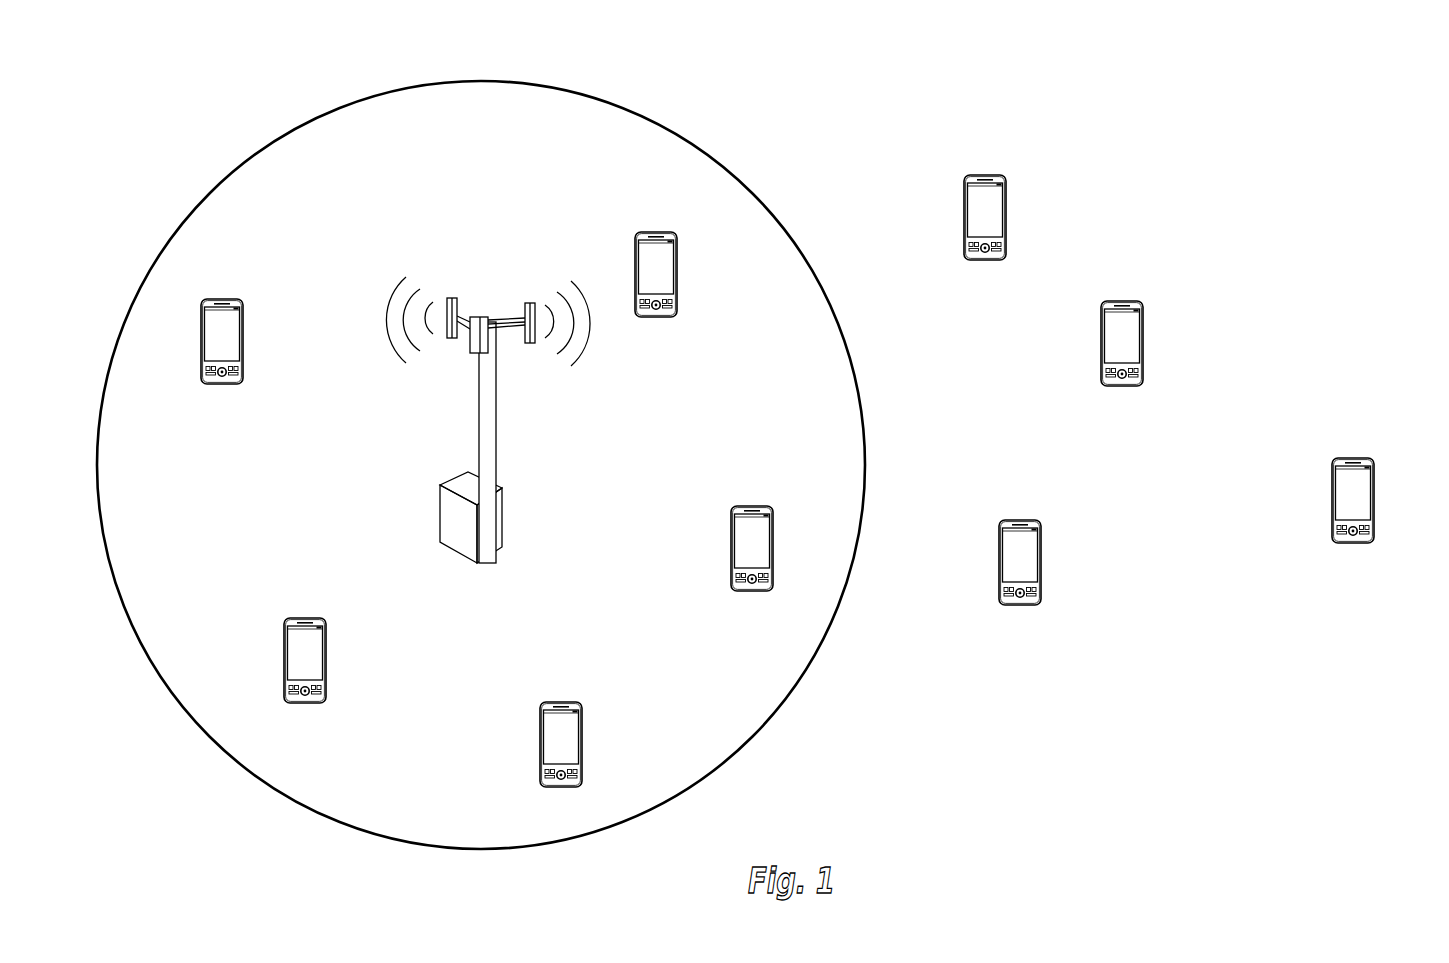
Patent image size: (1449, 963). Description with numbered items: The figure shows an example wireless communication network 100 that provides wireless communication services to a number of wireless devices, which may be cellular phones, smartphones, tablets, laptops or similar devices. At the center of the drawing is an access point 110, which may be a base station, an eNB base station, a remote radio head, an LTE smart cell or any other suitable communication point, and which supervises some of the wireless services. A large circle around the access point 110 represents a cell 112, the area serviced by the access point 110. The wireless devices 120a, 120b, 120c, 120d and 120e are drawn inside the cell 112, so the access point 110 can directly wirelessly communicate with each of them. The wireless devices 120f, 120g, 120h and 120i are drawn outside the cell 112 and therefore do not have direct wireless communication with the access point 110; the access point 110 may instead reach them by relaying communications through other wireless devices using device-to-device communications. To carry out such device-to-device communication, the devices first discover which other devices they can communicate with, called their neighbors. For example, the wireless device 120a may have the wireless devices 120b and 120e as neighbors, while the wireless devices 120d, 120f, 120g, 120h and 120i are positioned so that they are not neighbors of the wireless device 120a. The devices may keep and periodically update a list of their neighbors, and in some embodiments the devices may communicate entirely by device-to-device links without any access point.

The wireless communication network 100 is at (1350, 76).
The access point 110 is at (496, 418).
The cell 112 is at (660, 123).
The wireless device 120a is at (576, 701).
The wireless device 120b is at (320, 617).
The wireless device 120c is at (767, 505).
The wireless device 120d is at (671, 231).
The wireless device 120e is at (237, 298).
The wireless device 120f is at (1000, 174).
The wireless device 120g is at (1137, 300).
The wireless device 120h is at (1035, 519).
The wireless device 120i is at (1368, 457).